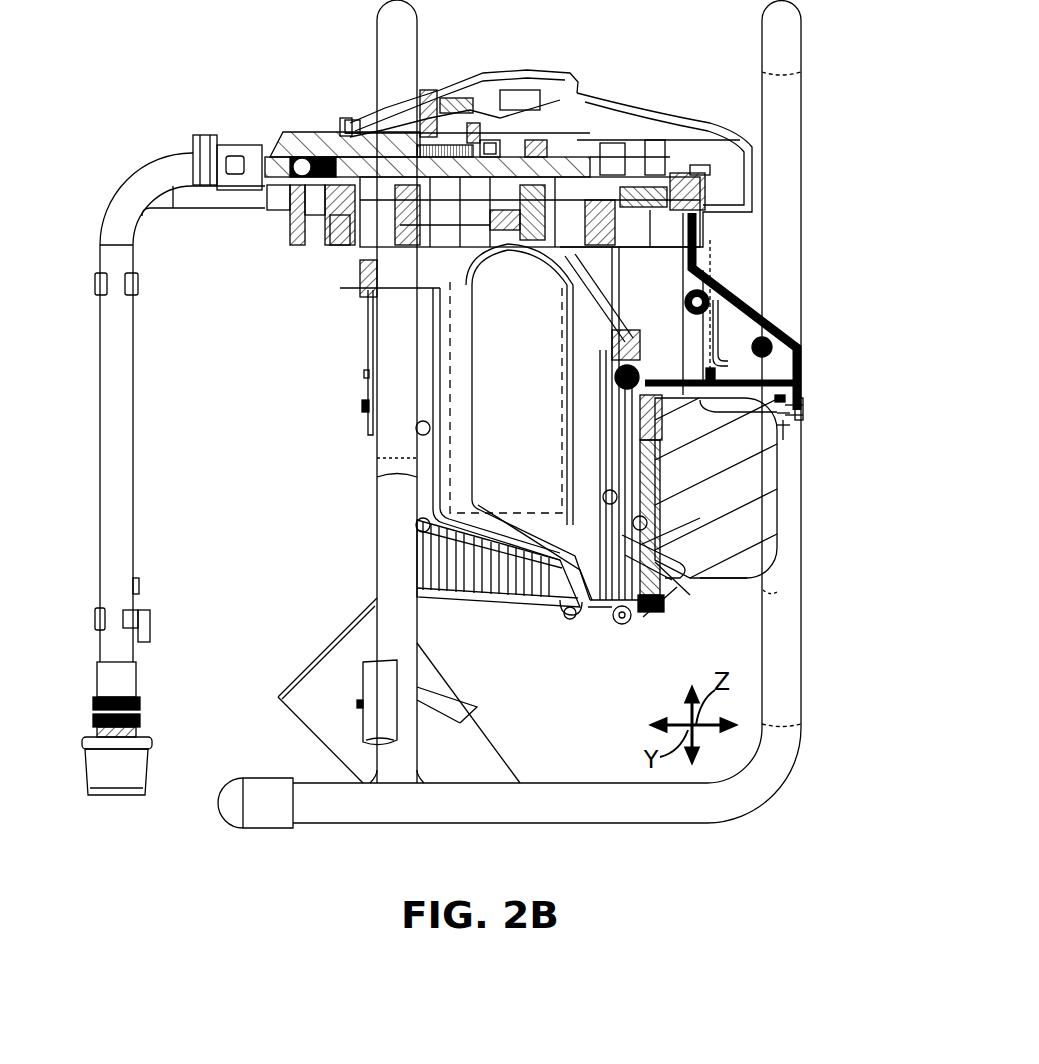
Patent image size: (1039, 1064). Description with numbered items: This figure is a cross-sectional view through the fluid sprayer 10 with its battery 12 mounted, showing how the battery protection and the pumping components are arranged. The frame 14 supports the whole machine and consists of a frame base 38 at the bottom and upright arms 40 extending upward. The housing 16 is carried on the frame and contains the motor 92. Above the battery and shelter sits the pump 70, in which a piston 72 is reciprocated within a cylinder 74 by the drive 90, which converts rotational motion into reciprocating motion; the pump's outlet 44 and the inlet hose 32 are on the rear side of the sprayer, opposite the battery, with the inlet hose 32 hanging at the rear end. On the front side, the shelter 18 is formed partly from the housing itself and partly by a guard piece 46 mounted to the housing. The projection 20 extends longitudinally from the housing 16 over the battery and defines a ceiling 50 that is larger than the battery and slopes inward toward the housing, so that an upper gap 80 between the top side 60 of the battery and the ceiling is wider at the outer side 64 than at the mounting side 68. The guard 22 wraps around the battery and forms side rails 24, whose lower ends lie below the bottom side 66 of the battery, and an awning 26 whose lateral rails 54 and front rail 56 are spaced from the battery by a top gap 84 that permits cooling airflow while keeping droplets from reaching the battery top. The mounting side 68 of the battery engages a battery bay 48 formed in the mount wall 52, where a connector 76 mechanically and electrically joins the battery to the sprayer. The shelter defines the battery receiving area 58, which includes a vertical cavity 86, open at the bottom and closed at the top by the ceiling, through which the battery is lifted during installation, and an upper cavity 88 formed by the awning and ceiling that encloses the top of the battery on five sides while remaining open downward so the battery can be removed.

The fluid sprayer 10 is at (665, 76).
The battery 12 is at (776, 570).
The frame 14 is at (803, 722).
The housing 16 is at (565, 607).
The shelter 18 is at (790, 428).
The projection 20 is at (778, 348).
The guard 22 is at (805, 400).
The side rails 24 is at (654, 582).
The awning 26 is at (802, 413).
The inlet hose 32 is at (110, 393).
The frame base 38 is at (553, 787).
The arms 40 is at (380, 527).
The outlet 44 is at (327, 245).
The guard piece 46 is at (643, 612).
The battery bay 48 is at (613, 506).
The ceiling 50 is at (756, 378).
The mount wall 52 is at (648, 500).
The lateral rails 54 is at (803, 425).
The front rail 56 is at (801, 410).
The battery receiving area 58 is at (688, 597).
The top side 60 is at (712, 405).
The outer side 64 is at (778, 516).
The bottom side 66 is at (745, 590).
The mounting side 68 is at (647, 455).
The pump 70 is at (343, 136).
The piston 72 is at (376, 167).
The cylinder 74 is at (290, 135).
The connector 76 is at (655, 400).
The upper gap 80 is at (690, 400).
The top gap 84 is at (782, 418).
The vertical cavity 86 is at (600, 600).
The upper cavity 88 is at (790, 370).
The drive 90 is at (583, 168).
The motor 92 is at (455, 290).